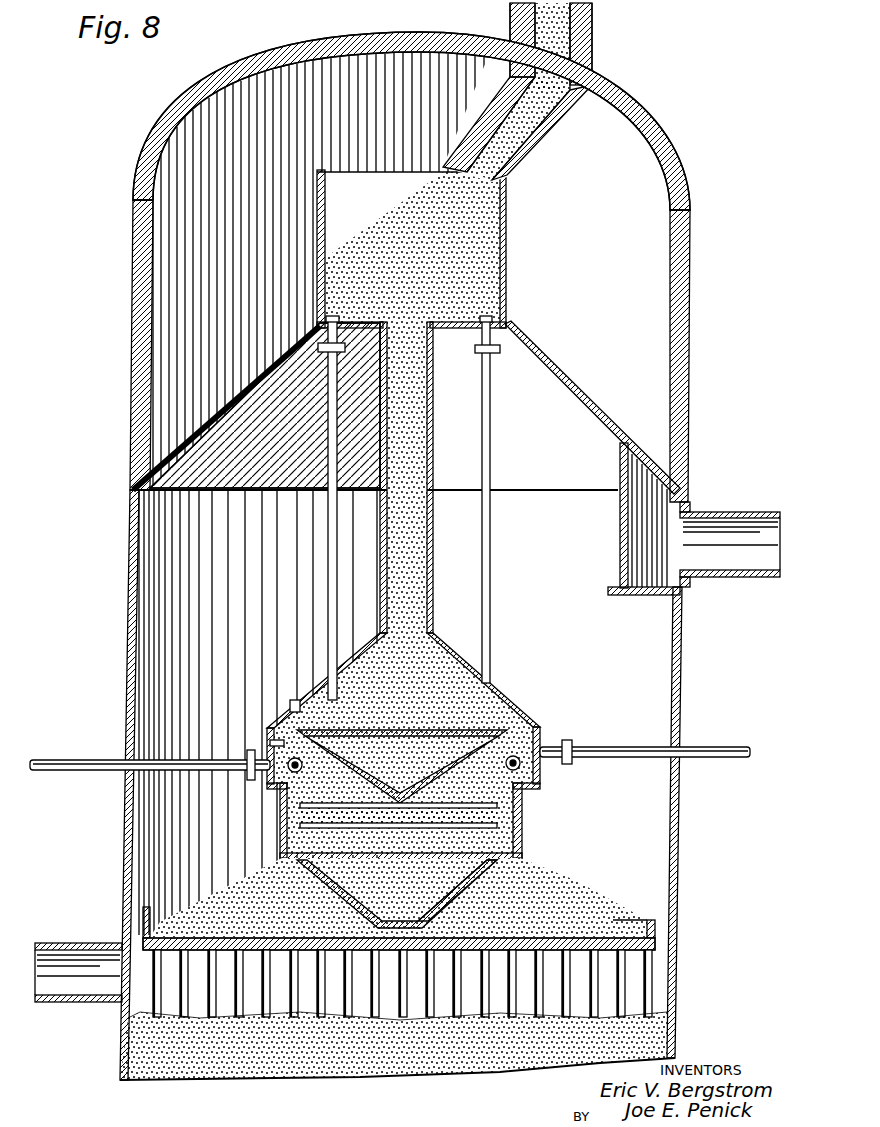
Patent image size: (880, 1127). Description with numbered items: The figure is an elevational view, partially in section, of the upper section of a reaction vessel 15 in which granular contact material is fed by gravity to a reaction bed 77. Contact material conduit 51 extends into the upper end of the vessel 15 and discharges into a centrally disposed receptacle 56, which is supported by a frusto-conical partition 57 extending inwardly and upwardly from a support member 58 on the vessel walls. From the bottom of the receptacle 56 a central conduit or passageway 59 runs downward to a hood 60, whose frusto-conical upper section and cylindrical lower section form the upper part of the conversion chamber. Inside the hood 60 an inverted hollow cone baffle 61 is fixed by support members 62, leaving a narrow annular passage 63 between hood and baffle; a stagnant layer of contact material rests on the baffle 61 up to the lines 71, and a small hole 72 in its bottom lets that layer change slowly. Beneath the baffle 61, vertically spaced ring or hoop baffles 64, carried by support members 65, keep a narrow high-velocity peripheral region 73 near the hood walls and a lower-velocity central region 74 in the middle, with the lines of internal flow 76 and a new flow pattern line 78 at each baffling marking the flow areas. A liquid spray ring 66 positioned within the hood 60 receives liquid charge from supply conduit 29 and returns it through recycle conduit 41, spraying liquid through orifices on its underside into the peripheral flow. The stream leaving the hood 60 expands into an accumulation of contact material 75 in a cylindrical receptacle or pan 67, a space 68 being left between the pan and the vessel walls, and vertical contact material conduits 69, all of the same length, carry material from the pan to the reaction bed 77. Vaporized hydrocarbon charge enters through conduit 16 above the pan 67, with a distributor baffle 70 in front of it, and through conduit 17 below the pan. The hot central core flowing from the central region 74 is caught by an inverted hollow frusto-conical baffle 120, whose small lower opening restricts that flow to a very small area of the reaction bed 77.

The reaction vessel 15 is at (132, 403).
The vaporized hydrocarbon charge conduit 16 is at (752, 512).
The vaporized hydrocarbon charge conduit 17 is at (45, 1002).
The liquid charge supply conduit 29 is at (723, 760).
The liquid charge recycle conduit 41 is at (88, 770).
The contact material conduit 51 is at (593, 58).
The receptacle 56 is at (507, 273).
The frusto-conical partition 57 is at (550, 366).
The support member 58 is at (133, 492).
The conduit or passageway 59 is at (432, 520).
The hood 60 is at (537, 720).
The baffle 61 is at (398, 800).
The support members 62 is at (270, 735).
The annular passage 63 is at (298, 707).
The ring or hoop baffles 64 is at (520, 804).
The support members 65 is at (520, 735).
The liquid spray ring 66 is at (270, 783).
The cylindrical receptacle or pan 67 is at (656, 942).
The space 68 is at (667, 923).
The vertical contact material conduits 69 is at (503, 1010).
The distributor baffle 70 is at (623, 537).
The lines 71 is at (342, 648).
The small hole 72 is at (401, 846).
The peripheral region 73 is at (523, 827).
The central region 74 is at (443, 855).
The accumulation of contact material 75 is at (262, 882).
The lines of internal flow 76 is at (282, 832).
The reaction bed 77 is at (160, 1030).
The flow pattern line 78 is at (525, 793).
The inverted hollow frusto-conical baffle 120 is at (462, 900).